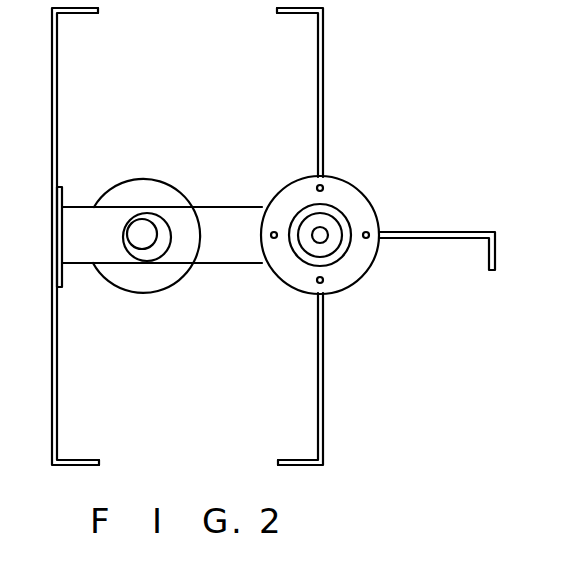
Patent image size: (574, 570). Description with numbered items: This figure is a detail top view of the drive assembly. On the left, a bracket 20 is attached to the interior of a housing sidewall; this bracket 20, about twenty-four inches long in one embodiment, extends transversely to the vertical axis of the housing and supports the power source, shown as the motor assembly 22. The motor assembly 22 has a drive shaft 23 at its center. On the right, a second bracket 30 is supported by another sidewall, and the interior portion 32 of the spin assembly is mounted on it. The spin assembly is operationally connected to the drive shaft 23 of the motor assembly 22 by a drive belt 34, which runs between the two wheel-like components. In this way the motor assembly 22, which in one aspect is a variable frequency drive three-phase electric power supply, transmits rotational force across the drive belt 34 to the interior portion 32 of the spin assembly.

The bracket 20 is at (58, 69).
The motor assembly 22 is at (120, 178).
The drive shaft 23 is at (141, 236).
The second bracket 30 is at (323, 82).
The interior portion of the spin assembly 32 is at (362, 182).
The drive belt 34 is at (227, 263).